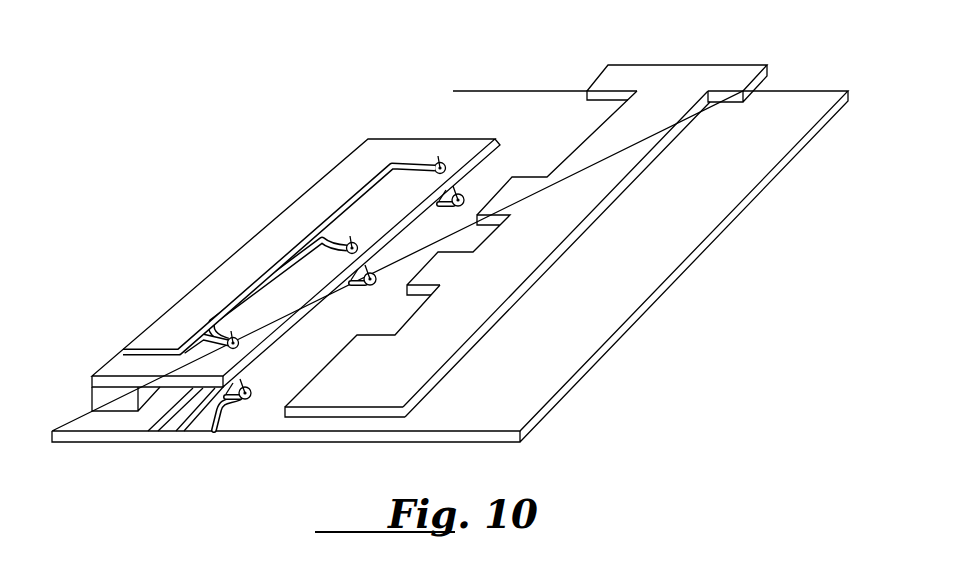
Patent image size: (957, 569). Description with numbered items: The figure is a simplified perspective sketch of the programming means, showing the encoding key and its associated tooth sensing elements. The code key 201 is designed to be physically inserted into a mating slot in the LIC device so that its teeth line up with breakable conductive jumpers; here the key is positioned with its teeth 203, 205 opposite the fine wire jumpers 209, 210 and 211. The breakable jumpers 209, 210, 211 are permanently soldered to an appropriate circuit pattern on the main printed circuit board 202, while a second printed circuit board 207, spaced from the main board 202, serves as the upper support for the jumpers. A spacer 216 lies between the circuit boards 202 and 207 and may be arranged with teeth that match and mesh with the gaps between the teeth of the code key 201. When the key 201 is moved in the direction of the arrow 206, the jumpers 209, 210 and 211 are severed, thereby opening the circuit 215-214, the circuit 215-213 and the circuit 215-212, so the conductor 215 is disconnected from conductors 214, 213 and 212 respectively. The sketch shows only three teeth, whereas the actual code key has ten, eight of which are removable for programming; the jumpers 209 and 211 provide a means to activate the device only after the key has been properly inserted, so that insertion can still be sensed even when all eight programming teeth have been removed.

The code key 201 is at (678, 65).
The printed circuit board 202 is at (480, 441).
The tooth 203 is at (537, 177).
The tooth 205 is at (392, 313).
The arrow 206 is at (566, 288).
The second printed circuit board 207 is at (408, 139).
The fine wire jumper 209 is at (257, 378).
The fine wire jumper 210 is at (378, 270).
The fine wire jumper 211 is at (470, 188).
The circuit 212 is at (148, 432).
The circuit 213 is at (177, 432).
The circuit 214 is at (212, 428).
The circuit 215 is at (116, 350).
The spacer 216 is at (104, 397).